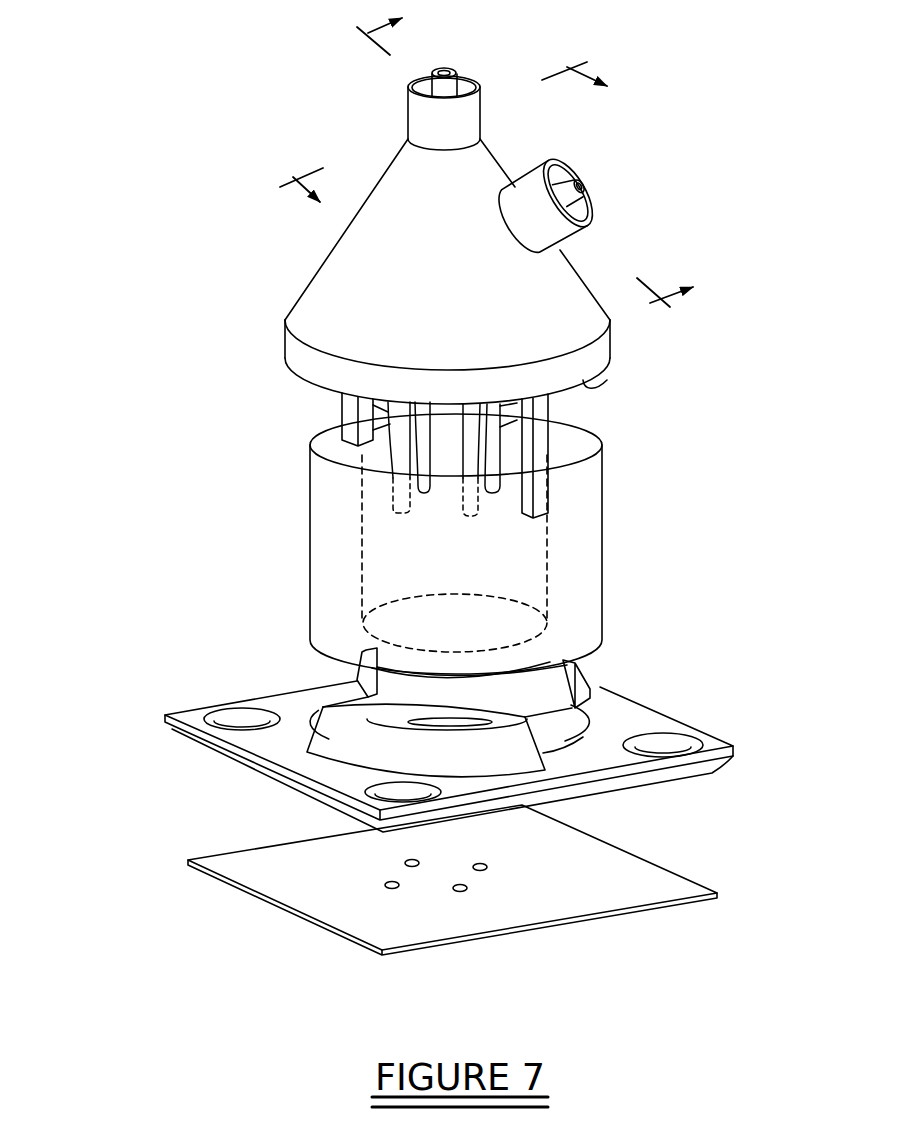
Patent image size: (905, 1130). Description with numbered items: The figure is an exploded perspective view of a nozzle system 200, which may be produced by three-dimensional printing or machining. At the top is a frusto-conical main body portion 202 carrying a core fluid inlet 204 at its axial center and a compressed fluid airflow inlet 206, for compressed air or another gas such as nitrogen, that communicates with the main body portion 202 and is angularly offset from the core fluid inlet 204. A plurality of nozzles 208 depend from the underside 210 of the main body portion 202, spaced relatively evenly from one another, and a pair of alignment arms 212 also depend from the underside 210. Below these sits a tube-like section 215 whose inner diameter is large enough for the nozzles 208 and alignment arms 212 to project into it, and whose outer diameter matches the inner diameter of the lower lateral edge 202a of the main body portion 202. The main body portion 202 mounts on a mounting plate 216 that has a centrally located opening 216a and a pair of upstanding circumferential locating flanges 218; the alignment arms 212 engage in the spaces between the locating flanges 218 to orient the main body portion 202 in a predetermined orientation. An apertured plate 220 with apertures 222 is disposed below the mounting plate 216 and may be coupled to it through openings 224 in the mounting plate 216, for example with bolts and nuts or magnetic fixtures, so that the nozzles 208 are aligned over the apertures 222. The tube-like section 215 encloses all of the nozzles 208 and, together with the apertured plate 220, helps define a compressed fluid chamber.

The nozzle system 200 is at (596, 118).
The main body portion 202 is at (342, 287).
The lower lateral edge 202a is at (298, 357).
The core fluid inlet 204 is at (472, 113).
The compressed fluid airflow inlet 206 is at (590, 191).
The nozzles 208 is at (400, 453).
The underside 210 is at (594, 386).
The alignment arms 212 is at (348, 413).
The tube-like section 215 is at (327, 558).
The mounting plate 216 is at (401, 700).
The centrally located opening 216a is at (573, 740).
The upstanding circumferential locating flanges 218 is at (367, 673).
The apertured plate 220 is at (483, 886).
The apertures 222 is at (393, 883).
The openings 224 is at (675, 740).